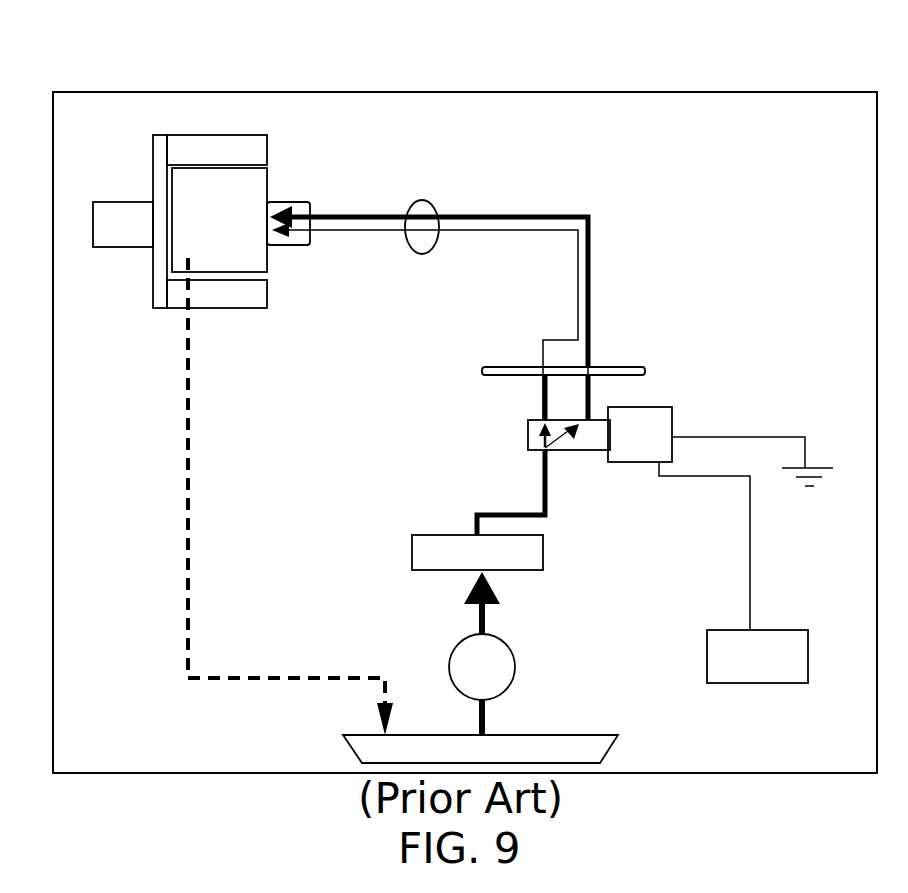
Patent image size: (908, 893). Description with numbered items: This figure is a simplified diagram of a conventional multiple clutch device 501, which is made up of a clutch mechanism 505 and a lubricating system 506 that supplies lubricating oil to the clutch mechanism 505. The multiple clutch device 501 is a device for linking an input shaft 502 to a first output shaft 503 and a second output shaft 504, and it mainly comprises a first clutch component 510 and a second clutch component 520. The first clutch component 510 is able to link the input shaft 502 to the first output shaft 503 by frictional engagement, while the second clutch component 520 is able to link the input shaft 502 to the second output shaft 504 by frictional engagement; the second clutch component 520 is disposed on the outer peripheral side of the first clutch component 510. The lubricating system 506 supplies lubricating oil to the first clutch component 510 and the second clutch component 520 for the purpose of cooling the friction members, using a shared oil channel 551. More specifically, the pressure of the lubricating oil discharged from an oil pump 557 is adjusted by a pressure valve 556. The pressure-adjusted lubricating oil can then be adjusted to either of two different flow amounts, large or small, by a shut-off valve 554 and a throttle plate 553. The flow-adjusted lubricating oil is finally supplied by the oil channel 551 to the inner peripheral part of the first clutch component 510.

The multiple clutch device 501 is at (482, 92).
The input shaft 502 is at (108, 213).
The first output shaft 503 is at (275, 205).
The second output shaft 504 is at (281, 221).
The clutch mechanism 505 is at (252, 118).
The lubricating system 506 is at (680, 243).
The first clutch component 510 is at (187, 160).
The second clutch component 520 is at (217, 128).
The oil channel 551 is at (509, 210).
The throttle plate 553 is at (620, 367).
The shut-off valve 554 is at (665, 410).
The pressure valve 556 is at (543, 550).
The oil pump 557 is at (500, 672).